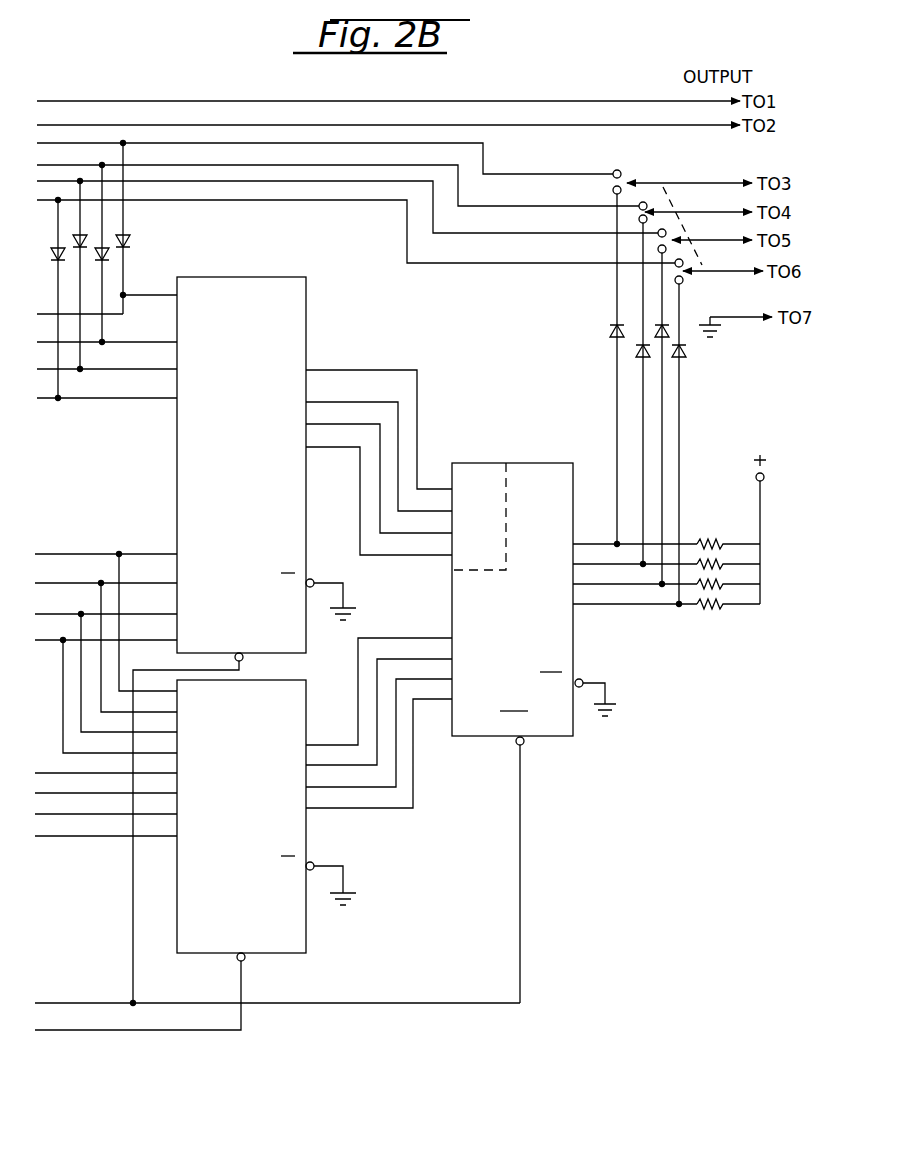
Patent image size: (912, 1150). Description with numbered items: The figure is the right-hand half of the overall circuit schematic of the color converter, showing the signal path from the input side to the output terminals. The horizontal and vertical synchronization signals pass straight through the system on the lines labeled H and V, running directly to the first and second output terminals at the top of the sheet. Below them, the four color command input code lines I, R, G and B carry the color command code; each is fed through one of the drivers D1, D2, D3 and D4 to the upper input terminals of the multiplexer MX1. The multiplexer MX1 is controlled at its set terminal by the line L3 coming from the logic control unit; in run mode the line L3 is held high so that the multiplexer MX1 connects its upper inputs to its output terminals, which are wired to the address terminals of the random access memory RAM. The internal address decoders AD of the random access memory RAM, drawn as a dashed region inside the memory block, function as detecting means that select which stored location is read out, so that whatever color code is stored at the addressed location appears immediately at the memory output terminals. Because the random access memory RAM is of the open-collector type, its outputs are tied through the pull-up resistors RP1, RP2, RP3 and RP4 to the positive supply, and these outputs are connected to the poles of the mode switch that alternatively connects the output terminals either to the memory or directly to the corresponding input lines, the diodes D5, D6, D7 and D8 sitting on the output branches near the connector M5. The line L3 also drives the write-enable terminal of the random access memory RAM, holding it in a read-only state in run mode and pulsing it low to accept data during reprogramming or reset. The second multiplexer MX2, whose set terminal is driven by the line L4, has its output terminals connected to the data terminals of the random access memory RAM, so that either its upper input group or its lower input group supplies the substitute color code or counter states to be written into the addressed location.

The horizontal synchronization signal line H is at (548, 101).
The vertical synchronization signal line V is at (611, 125).
The intensity color command input code line I is at (542, 148).
The red color command input code line R is at (545, 206).
The green color command input code line G is at (562, 233).
The blue color command input code line B is at (564, 263).
The driver D1 is at (128, 238).
The driver D2 is at (106, 257).
The driver D3 is at (76, 247).
The driver D4 is at (53, 252).
The diode D5 is at (612, 325).
The diode D6 is at (637, 346).
The diode D7 is at (668, 325).
The diode D8 is at (683, 343).
The multiplexer MX1 is at (270, 277).
The multiplexer MX2 is at (290, 680).
The random access memory RAM is at (519, 717).
The internal address decoders AD is at (508, 498).
The line L3 is at (133, 938).
The line L4 is at (242, 1012).
The monitor output connector M5 is at (707, 291).
The pull-up resistor RP1 is at (748, 608).
The pull-up resistor RP2 is at (748, 588).
The pull-up resistor RP3 is at (748, 568).
The pull-up resistor RP4 is at (752, 548).